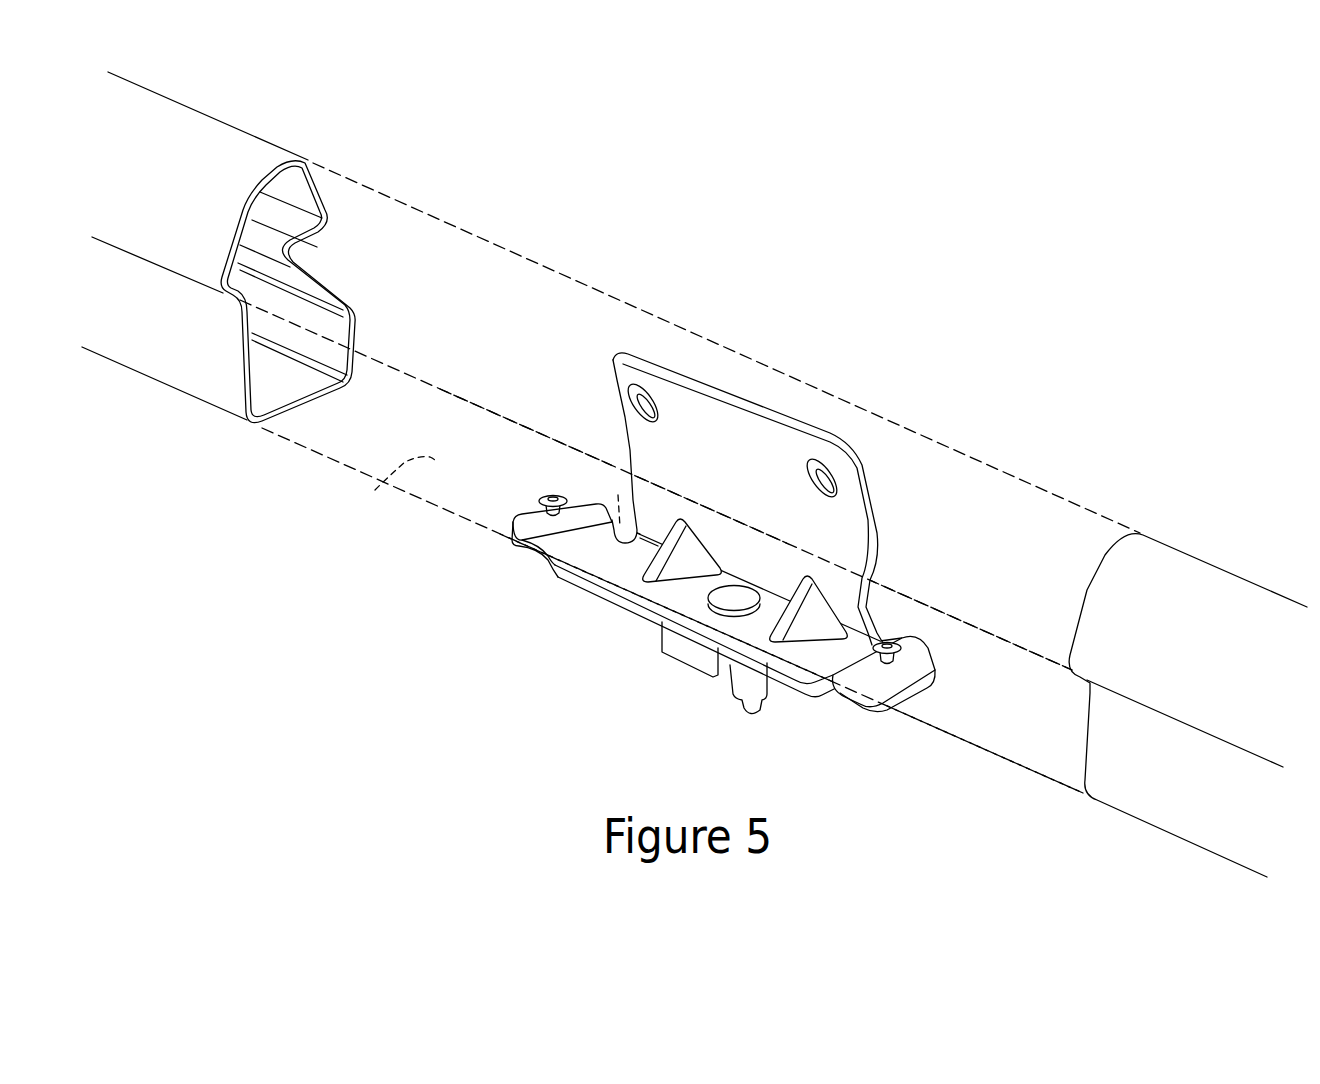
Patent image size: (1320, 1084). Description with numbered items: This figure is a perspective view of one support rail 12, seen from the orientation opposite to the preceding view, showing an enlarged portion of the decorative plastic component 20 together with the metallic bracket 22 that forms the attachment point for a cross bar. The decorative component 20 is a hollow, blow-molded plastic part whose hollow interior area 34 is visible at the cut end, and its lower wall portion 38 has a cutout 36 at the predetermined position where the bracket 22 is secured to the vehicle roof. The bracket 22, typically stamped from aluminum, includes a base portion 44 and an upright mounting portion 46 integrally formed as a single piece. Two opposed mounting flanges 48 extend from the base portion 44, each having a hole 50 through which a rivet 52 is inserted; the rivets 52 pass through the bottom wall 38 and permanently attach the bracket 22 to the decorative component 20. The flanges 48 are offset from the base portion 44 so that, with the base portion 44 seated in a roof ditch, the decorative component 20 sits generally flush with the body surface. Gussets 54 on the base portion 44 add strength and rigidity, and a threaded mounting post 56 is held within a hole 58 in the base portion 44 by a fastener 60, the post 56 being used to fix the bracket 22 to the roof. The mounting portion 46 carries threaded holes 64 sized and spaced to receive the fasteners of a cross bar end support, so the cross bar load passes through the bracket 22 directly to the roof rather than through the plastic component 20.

The support rail 12 is at (880, 314).
The decorative plastic component 20 is at (1180, 572).
The bracket 22 is at (713, 565).
The hollow interior area 34 is at (273, 392).
The cutout 36 is at (618, 495).
The lower wall portion 38 is at (375, 490).
The base portion 44 is at (613, 590).
The mounting portion 46 is at (733, 490).
The mounting flanges 48 is at (517, 542).
The holes 50 is at (540, 511).
The rivets 52 is at (548, 497).
The gussets 54 is at (637, 563).
The threaded mounting post 56 is at (735, 705).
The hole 58 is at (708, 597).
The fastener 60 is at (680, 655).
The threaded hole 64 is at (628, 402).